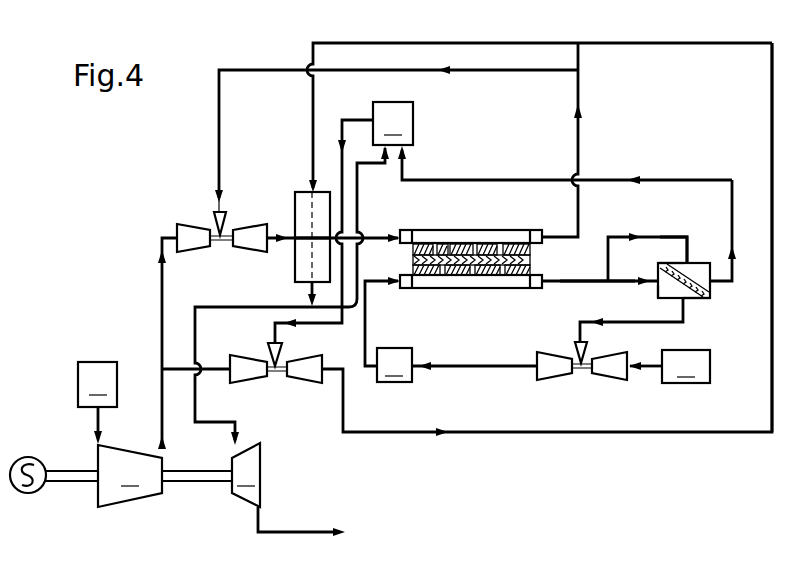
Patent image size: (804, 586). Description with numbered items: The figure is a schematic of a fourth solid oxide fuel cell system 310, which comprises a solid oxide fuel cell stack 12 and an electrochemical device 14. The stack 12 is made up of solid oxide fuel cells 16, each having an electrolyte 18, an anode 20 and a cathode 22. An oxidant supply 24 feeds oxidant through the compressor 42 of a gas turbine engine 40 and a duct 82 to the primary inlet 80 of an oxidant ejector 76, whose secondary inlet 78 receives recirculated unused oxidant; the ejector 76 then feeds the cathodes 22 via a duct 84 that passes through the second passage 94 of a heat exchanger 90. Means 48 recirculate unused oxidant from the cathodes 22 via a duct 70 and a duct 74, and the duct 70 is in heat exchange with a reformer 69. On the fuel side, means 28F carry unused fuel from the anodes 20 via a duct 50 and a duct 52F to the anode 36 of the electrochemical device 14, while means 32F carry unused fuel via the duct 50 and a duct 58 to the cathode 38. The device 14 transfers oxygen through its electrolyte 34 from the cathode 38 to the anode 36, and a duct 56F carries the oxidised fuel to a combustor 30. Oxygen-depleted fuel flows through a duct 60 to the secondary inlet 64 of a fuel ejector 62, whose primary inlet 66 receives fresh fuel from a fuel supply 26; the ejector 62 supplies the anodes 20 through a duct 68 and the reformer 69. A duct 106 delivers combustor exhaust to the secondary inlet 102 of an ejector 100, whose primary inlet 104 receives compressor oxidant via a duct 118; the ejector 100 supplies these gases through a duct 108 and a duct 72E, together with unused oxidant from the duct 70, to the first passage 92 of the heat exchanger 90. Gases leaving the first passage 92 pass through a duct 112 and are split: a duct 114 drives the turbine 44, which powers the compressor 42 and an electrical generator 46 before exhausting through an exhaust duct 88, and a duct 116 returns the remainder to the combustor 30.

The solid oxide fuel cell stack 12 is at (476, 256).
The electrochemical device 14 is at (679, 291).
The solid oxide fuel cell 16 is at (465, 245).
The electrolyte 18 is at (413, 258).
The anode 20 is at (445, 270).
The cathode 22 is at (503, 245).
The oxidant supply 24 is at (97, 403).
The fuel supply 26 is at (669, 366).
The means to supply unused fuel to the combustor 28F is at (683, 227).
The combustor 30 is at (393, 123).
The means to supply unused fuel back to the anodes 32F is at (652, 297).
The electrolyte 34 is at (660, 263).
The anode 36 is at (712, 286).
The cathode 38 is at (688, 300).
The gas turbine engine 40 is at (351, 228).
The compressor 42 is at (130, 476).
The turbine 44 is at (246, 475).
The electrical generator 46 is at (24, 493).
The means to supply unused oxidant back to the cathodes 48 is at (588, 92).
The duct 50 is at (590, 276).
The duct 52F is at (667, 235).
The duct 56F is at (692, 178).
The duct 58 is at (627, 283).
The duct 60 is at (640, 323).
The fuel ejector 62 is at (582, 378).
The secondary inlet 64 is at (575, 355).
The primary inlet 66 is at (605, 372).
The duct 68 is at (453, 363).
The reformer 69 is at (394, 365).
The duct 70 is at (581, 226).
The duct 72E is at (537, 42).
The duct 74 is at (500, 72).
The oxidant ejector 76 is at (206, 220).
The secondary inlet 78 is at (213, 213).
The primary inlet 80 is at (190, 239).
The duct 82 is at (160, 298).
The duct 84 is at (378, 232).
The exhaust duct 88 is at (290, 533).
The heat exchanger 90 is at (293, 213).
The first passage 92 is at (313, 210).
The second passage 94 is at (303, 233).
The ejector 100 is at (268, 381).
The secondary inlet 102 is at (270, 357).
The primary inlet 104 is at (248, 373).
The duct 106 is at (363, 118).
The duct 108 is at (670, 41).
The duct 112 is at (310, 283).
The duct 114 is at (238, 307).
The duct 116 is at (329, 316).
The duct 118 is at (180, 367).
The solid oxide fuel cell system 310 is at (675, 118).